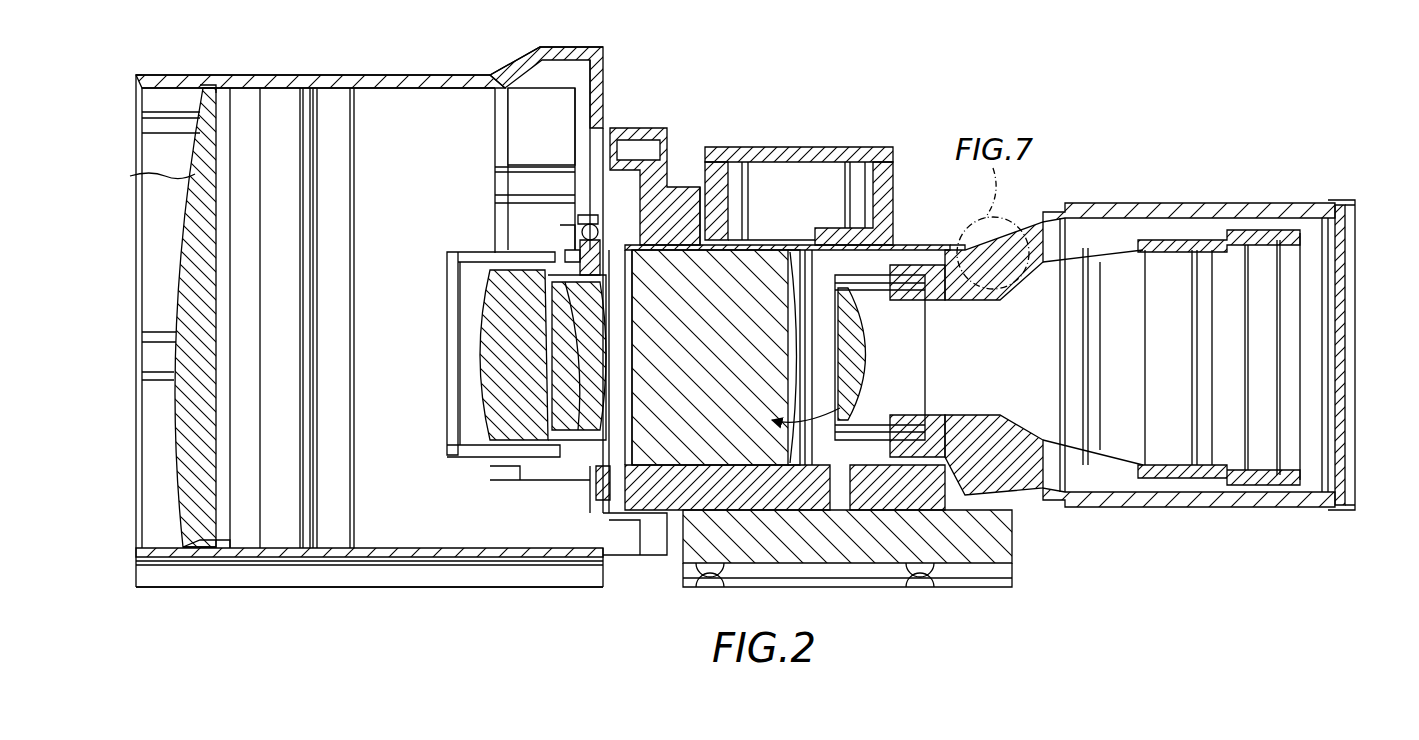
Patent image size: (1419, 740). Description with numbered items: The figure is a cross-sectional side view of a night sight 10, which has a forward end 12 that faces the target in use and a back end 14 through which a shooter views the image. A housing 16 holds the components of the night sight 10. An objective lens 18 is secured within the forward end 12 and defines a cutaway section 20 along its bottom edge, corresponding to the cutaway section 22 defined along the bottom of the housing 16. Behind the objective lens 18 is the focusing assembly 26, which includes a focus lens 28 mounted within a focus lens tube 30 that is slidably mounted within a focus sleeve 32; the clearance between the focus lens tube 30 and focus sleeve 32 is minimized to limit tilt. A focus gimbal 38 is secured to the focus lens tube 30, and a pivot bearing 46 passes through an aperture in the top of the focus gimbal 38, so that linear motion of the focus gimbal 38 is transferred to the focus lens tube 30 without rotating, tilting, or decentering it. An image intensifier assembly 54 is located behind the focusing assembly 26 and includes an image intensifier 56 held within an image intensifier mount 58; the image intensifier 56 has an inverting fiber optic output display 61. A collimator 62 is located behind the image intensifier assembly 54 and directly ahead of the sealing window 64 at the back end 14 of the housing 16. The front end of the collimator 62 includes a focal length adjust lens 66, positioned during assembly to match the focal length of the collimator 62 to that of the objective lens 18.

The night sight 10 is at (340, 637).
The forward end 12 is at (140, 622).
The back end 14 is at (1116, 550).
The housing 16 is at (228, 578).
The objective lens 18 is at (190, 178).
The cutaway section 20 is at (192, 528).
The cutaway section 22 is at (296, 580).
The focusing assembly 26 is at (603, 278).
The focus lens 28 is at (587, 357).
The focus lens tube 30 is at (488, 458).
The focus sleeve 32 is at (540, 458).
The focus gimbal 38 is at (600, 245).
The pivot bearing 46 is at (578, 216).
The image intensifier assembly 54 is at (864, 403).
The image intensifier 56 is at (767, 272).
The image intensifier mount 58 is at (643, 229).
The inverting fiber optic output display 61 is at (786, 354).
The collimator 62 is at (1182, 246).
The sealing window 64 is at (1347, 413).
The focal length adjust lens 66 is at (872, 330).